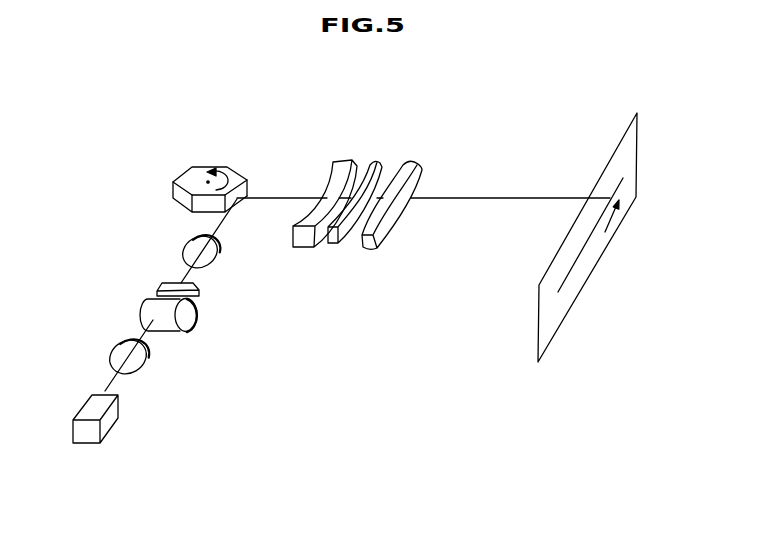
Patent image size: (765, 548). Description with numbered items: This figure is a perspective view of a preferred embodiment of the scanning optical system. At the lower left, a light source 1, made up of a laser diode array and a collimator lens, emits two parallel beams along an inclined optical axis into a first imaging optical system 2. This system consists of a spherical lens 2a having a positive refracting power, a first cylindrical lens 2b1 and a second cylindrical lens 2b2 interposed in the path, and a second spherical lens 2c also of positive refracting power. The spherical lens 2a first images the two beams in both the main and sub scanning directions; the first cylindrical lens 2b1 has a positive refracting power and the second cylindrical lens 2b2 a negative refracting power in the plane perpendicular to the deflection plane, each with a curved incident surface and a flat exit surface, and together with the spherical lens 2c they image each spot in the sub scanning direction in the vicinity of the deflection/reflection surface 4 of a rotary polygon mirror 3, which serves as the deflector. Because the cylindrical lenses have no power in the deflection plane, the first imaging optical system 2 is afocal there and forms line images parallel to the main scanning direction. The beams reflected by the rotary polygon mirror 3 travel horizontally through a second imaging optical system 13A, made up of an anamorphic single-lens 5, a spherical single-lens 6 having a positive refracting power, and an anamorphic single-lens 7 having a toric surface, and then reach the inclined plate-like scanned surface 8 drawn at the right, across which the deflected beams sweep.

The light source 1 is at (112, 418).
The first imaging optical system 2 is at (178, 247).
The spherical lens 2a is at (140, 368).
The first cylindrical lens 2b1 is at (182, 331).
The second cylindrical lens 2b2 is at (198, 296).
The spherical lens 2c is at (217, 257).
The rotary polygon mirror 3 is at (188, 174).
The deflection/reflection surface 4 is at (242, 175).
The anamorphic single-lens 5 is at (342, 161).
The spherical single-lens 6 is at (373, 163).
The anamorphic single-lens 7 is at (411, 163).
The scanned surface (photosensitive drum) 8 is at (615, 162).
The second imaging optical system 13A is at (312, 120).